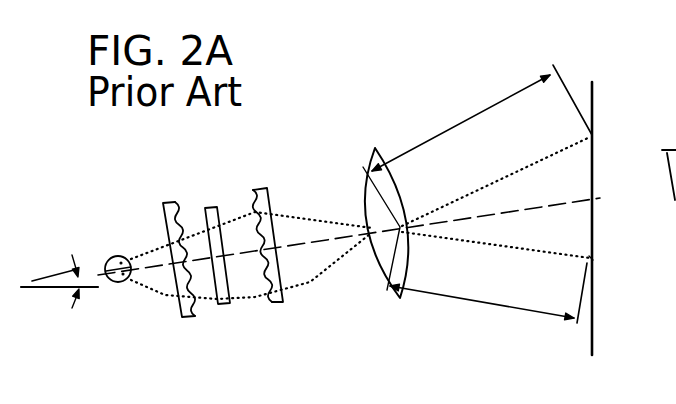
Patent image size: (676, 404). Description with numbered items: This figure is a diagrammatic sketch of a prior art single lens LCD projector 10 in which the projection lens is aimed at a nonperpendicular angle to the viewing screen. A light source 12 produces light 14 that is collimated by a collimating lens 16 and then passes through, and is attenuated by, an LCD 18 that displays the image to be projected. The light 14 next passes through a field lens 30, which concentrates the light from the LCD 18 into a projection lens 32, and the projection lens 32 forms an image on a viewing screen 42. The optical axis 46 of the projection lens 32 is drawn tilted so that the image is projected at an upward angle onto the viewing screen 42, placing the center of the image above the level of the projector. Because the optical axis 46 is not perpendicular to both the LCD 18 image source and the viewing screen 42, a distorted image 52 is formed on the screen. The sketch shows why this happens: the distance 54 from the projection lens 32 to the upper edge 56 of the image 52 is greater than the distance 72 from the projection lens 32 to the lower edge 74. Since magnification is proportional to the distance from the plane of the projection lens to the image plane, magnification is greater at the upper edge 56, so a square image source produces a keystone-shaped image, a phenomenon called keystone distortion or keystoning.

The LCD projector 10 is at (323, 136).
The light source 12 is at (127, 283).
The light 14 is at (138, 242).
The collimating lens 16 is at (190, 321).
The LCD 18 is at (228, 308).
The field lens 30 is at (278, 308).
The projection lens 32 is at (400, 302).
The viewing screen 42 is at (592, 342).
The optical axis 46 is at (510, 213).
The distorted image 52 is at (96, 290).
The distance from projection lens to upper edge 54 is at (467, 122).
The upper edge 56 is at (593, 134).
The distance from projection lens to lower edge 72 is at (488, 290).
The lower edge 74 is at (593, 258).